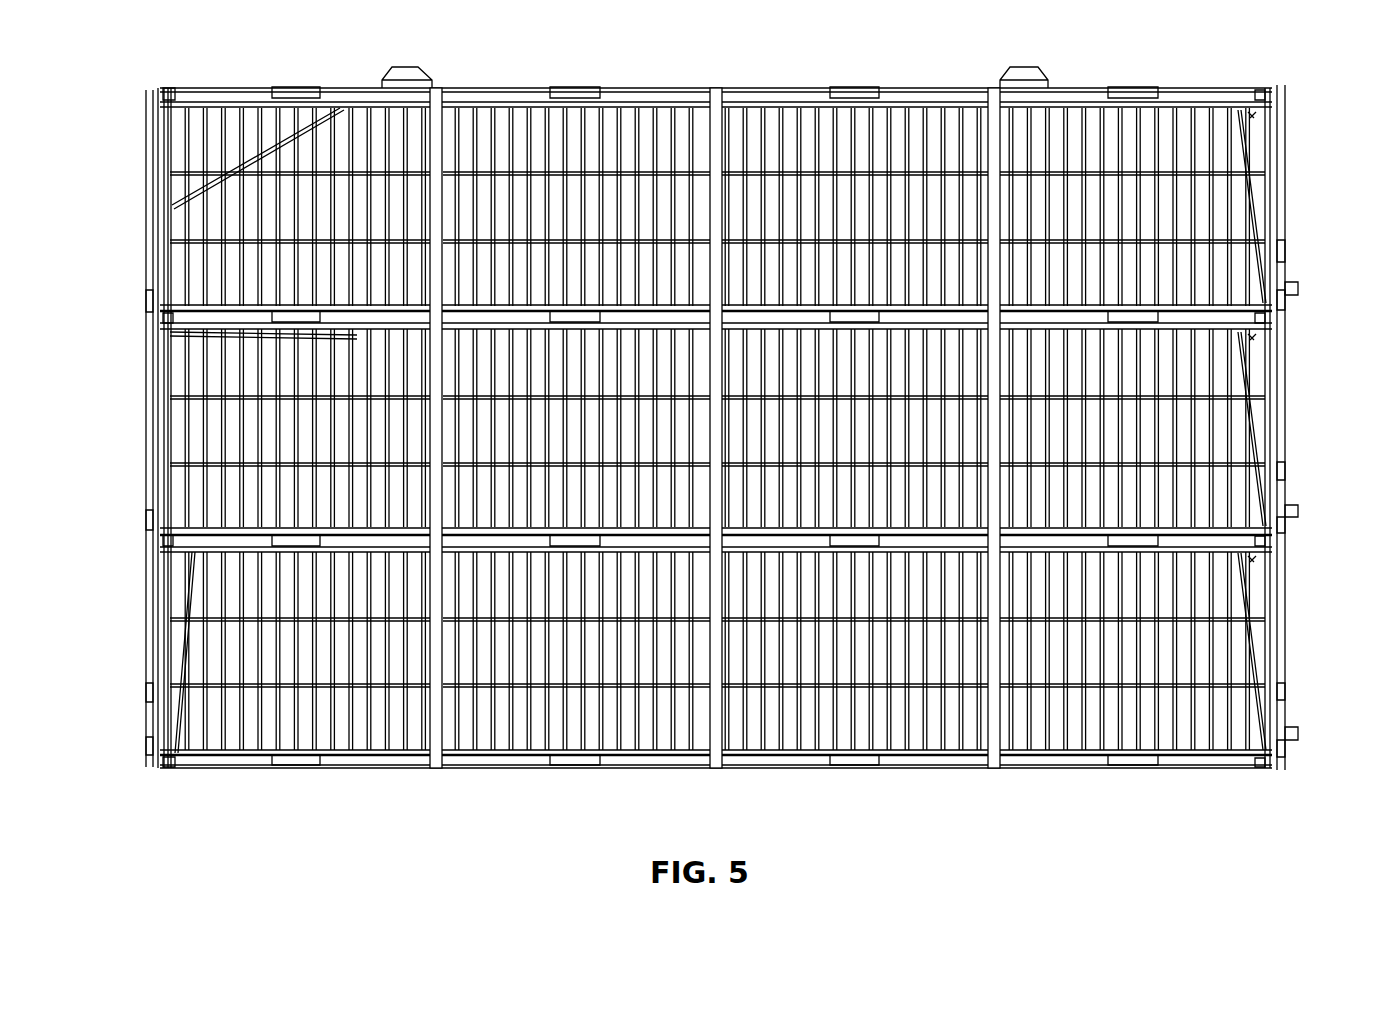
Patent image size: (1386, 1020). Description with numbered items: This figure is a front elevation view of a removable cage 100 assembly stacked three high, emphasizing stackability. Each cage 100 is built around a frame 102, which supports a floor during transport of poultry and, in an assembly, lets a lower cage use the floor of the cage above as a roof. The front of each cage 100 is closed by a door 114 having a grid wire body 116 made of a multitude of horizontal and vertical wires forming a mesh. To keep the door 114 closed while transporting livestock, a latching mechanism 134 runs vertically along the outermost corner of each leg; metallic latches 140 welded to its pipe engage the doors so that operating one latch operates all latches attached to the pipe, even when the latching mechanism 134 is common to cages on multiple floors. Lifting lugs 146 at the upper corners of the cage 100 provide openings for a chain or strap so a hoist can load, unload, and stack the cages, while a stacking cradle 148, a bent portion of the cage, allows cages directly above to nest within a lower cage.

The cage 100 is at (145, 112).
The frame 102 is at (218, 763).
The door 114 is at (218, 717).
The grid wire body 116 is at (240, 637).
The latching mechanism 134 is at (150, 388).
The latch 140 is at (1300, 733).
The lifting lug 146 is at (1267, 97).
The stacking cradle 148 is at (405, 74).